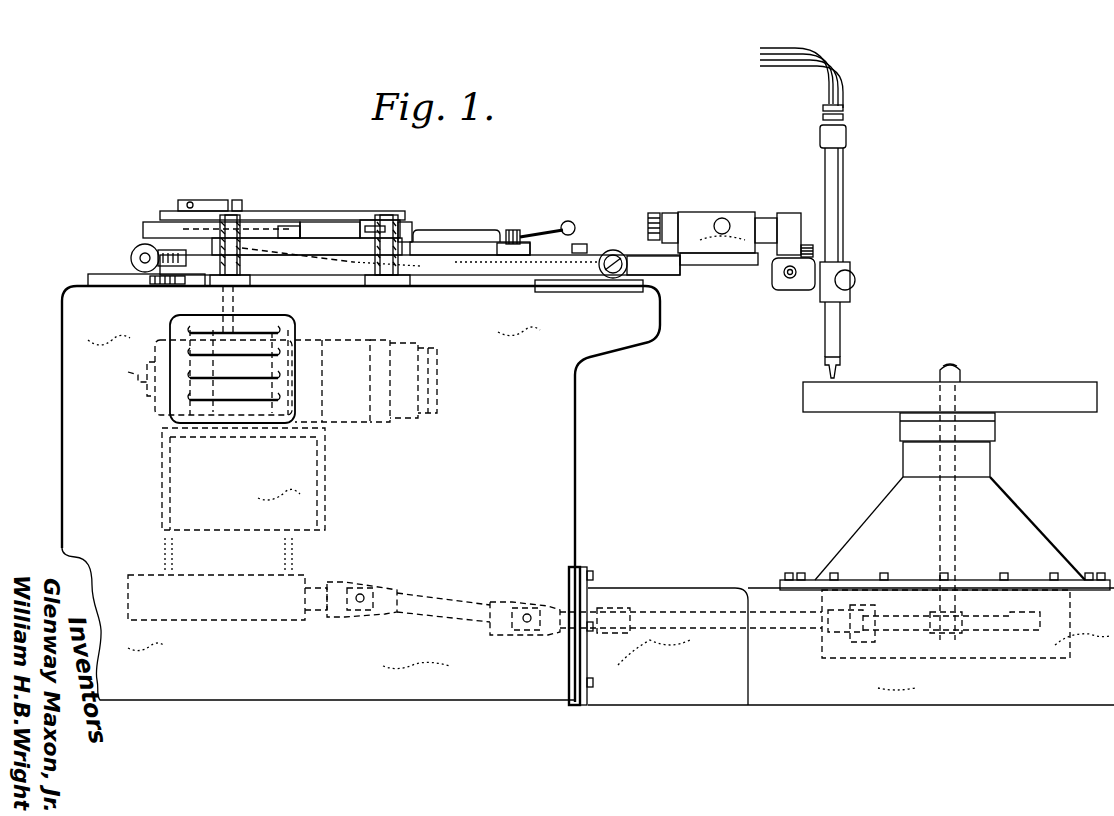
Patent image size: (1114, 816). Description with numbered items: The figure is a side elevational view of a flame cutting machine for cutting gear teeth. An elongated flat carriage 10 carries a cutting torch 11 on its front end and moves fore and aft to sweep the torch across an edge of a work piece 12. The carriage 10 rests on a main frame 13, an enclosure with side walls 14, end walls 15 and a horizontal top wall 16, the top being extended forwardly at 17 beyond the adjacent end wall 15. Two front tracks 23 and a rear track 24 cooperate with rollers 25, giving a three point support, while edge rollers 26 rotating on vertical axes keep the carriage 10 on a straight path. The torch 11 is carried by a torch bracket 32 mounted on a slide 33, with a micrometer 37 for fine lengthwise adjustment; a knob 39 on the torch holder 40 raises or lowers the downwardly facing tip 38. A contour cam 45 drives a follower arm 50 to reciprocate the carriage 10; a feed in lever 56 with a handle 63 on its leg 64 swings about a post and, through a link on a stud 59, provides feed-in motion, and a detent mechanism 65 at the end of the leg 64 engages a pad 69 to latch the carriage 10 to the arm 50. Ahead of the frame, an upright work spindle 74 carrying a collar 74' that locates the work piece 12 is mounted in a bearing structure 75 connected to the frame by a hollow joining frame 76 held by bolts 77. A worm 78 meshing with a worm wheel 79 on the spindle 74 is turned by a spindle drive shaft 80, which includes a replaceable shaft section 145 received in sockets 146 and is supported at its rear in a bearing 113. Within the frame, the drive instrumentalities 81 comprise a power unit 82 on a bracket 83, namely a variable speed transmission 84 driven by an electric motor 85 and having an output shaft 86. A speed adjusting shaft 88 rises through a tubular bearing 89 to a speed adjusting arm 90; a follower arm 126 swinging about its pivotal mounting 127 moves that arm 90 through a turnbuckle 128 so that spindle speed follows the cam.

The carriage 10 is at (618, 187).
The cutting torch 11 is at (843, 175).
The work piece 12 is at (1050, 382).
The main frame 13 is at (350, 494).
The side walls 14 is at (432, 527).
The end walls 15 is at (336, 494).
The top wall 16 is at (520, 278).
The forward extension 17 is at (662, 316).
The front tracks 23 is at (594, 292).
The rear track 24 is at (100, 274).
The rollers 25 is at (608, 250).
The edge rollers 26 is at (160, 284).
The torch bracket 32 is at (788, 195).
The slide 33 is at (722, 265).
The micrometer 37 is at (658, 212).
The torch tip 38 is at (840, 372).
The knob 39 is at (850, 280).
The torch holder 40 is at (845, 262).
The contour cam 45 is at (300, 230).
The follower arm 50 is at (332, 240).
The feed in lever 56 is at (437, 230).
The stud 59 is at (395, 215).
The handle 63 is at (567, 221).
The lever leg 64 is at (470, 242).
The detent mechanism 65 is at (535, 240).
The pad 69 is at (505, 256).
The work spindle 74 is at (969, 356).
The collar 74' is at (915, 431).
The bearing structure 75 is at (945, 485).
The joining frame 76 is at (720, 588).
The bolts 77 is at (593, 572).
The worm 78 is at (947, 633).
The worm wheel 79 is at (1040, 630).
The spindle drive shaft 80 is at (685, 685).
The drive instrumentalities 81 is at (421, 452).
The power unit 82 is at (147, 408).
The bracket 83 is at (165, 445).
The variable speed transmission 84 is at (296, 332).
The electric motor 85 is at (437, 383).
The output shaft 86 is at (128, 372).
The speed adjusting shaft 88 is at (236, 300).
The tubular bearing 89 is at (240, 218).
The speed adjusting arm 90 is at (160, 211).
The bearing 113 is at (203, 622).
The arm 126 is at (280, 222).
The pivotal mounting 127 is at (406, 222).
The turnbuckle 128 is at (208, 200).
The shaft section 145 is at (680, 612).
The sockets 146 is at (615, 608).